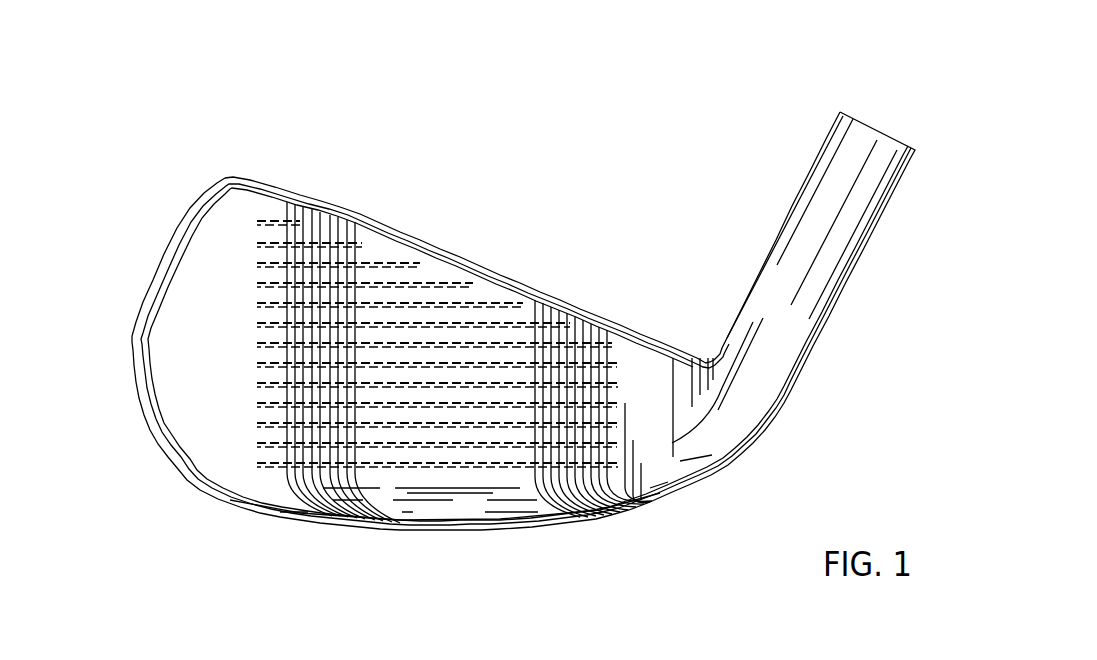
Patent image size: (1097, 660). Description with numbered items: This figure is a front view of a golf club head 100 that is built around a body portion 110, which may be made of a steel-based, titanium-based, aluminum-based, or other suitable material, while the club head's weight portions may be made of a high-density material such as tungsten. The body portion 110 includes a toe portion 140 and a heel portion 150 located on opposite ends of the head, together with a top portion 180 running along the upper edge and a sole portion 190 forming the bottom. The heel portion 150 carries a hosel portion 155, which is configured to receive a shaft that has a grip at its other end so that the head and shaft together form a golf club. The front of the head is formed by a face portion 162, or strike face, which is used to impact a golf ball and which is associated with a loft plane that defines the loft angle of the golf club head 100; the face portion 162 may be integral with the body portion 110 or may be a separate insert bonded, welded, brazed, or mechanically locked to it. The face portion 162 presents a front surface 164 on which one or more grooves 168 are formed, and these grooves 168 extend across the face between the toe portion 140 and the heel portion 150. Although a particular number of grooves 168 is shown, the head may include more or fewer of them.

The golf club head 100 is at (188, 106).
The body portion 110 is at (237, 178).
The toe portion 140 is at (120, 396).
The heel portion 150 is at (795, 447).
The hosel portion 155 is at (835, 175).
The face portion 162 is at (227, 435).
The front surface 164 is at (190, 398).
The grooves 168 is at (200, 275).
The top portion 180 is at (486, 221).
The sole portion 190 is at (400, 550).